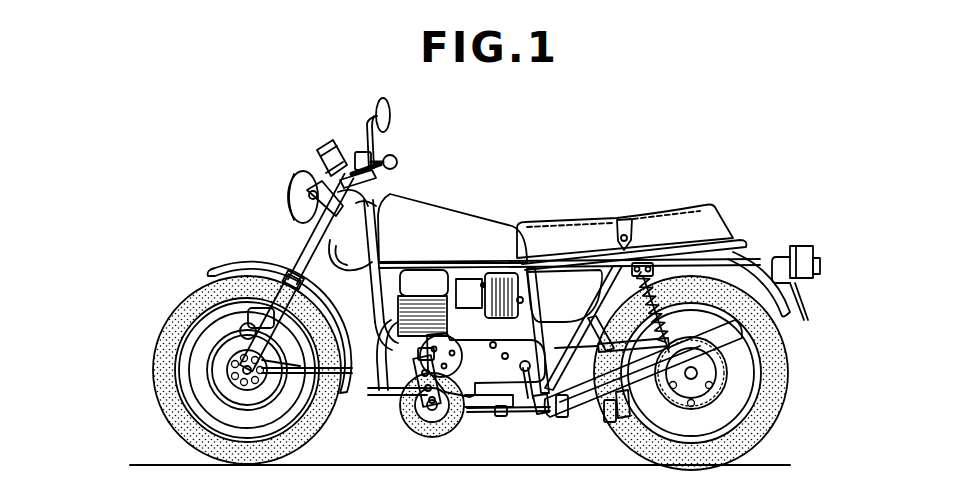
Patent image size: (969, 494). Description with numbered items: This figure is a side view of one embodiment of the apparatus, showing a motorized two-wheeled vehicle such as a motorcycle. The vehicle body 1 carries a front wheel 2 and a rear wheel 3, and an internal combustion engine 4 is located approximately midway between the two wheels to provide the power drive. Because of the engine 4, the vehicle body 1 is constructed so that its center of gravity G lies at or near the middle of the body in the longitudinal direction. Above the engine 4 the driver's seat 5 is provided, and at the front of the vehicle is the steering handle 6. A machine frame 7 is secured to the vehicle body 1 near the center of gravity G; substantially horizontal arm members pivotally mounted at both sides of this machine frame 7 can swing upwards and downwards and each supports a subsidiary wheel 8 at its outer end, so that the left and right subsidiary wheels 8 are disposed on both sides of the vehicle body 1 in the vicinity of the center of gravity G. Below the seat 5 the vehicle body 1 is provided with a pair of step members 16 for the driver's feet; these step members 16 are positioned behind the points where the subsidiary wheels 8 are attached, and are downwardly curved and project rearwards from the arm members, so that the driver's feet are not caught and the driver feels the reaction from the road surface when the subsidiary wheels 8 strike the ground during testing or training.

The vehicle body 1 is at (569, 201).
The front wheel 2 is at (231, 370).
The rear wheel 3 is at (701, 373).
The internal combustion engine 4 is at (392, 399).
The driver's seat 5 is at (668, 227).
The steering handle 6 is at (376, 152).
The machine frame 7 is at (363, 275).
The subsidiary wheel 8 is at (459, 418).
The step member 16 is at (551, 413).
The center of gravity G is at (501, 229).